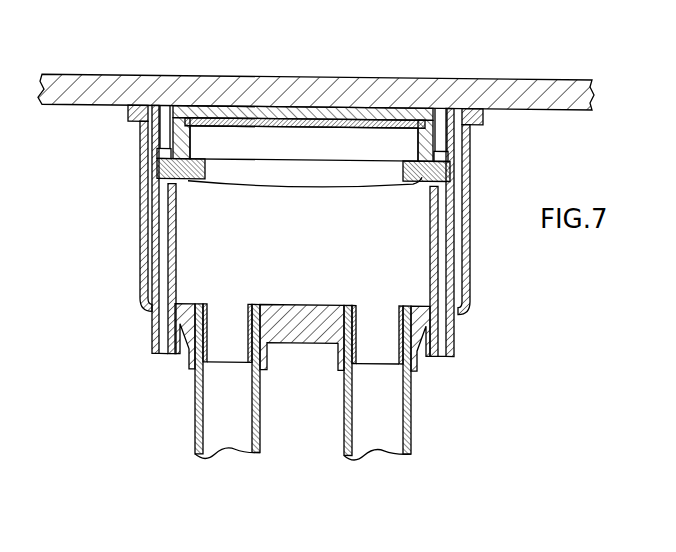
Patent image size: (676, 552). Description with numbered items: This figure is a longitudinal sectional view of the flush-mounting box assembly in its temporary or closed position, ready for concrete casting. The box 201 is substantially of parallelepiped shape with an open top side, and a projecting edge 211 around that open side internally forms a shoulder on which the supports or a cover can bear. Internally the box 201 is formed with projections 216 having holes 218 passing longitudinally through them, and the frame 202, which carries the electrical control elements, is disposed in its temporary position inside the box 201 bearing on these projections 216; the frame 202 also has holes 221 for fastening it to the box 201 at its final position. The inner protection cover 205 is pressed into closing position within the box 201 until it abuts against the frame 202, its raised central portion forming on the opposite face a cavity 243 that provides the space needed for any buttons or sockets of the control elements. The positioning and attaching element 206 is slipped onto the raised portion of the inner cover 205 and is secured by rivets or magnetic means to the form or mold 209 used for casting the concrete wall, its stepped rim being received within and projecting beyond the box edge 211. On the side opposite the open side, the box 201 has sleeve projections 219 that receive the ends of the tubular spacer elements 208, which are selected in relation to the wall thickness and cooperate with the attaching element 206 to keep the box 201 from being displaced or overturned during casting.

The box 201 is at (465, 183).
The frame 202 is at (190, 181).
The inner protection cover 205 is at (250, 127).
The positioning and attaching element 206 is at (378, 115).
The spacer elements 208 is at (344, 408).
The form or mold 209 is at (562, 66).
The projecting edge 211 is at (468, 131).
The projections 216 is at (447, 248).
The holes 218 is at (437, 238).
The sleeve projections 219 is at (188, 345).
The holes 221 is at (440, 170).
The cavity 243 is at (312, 157).